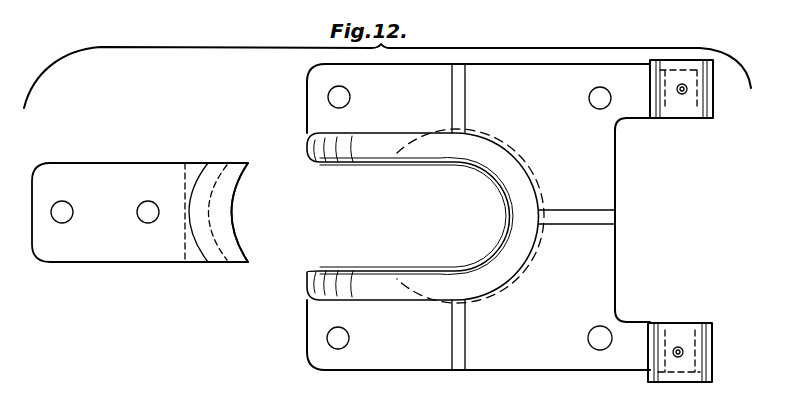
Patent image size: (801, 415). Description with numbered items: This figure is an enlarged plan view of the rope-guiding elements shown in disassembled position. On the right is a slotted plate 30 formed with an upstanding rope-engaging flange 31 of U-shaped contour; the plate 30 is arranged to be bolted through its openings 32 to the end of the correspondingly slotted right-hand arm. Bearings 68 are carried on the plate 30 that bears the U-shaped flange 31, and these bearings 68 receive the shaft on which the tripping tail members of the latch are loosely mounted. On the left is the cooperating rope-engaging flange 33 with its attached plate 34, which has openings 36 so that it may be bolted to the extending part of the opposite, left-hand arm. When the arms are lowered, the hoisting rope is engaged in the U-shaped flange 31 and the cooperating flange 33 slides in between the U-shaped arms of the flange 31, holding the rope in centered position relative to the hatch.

The slotted plate 30 is at (538, 352).
The rope-engaging flange 31 is at (512, 182).
The openings 32 is at (338, 97).
The cooperating rope-engaging flange 33 is at (220, 211).
The attached plate 34 is at (131, 242).
The openings 36 is at (145, 210).
The bearings 68 is at (708, 97).